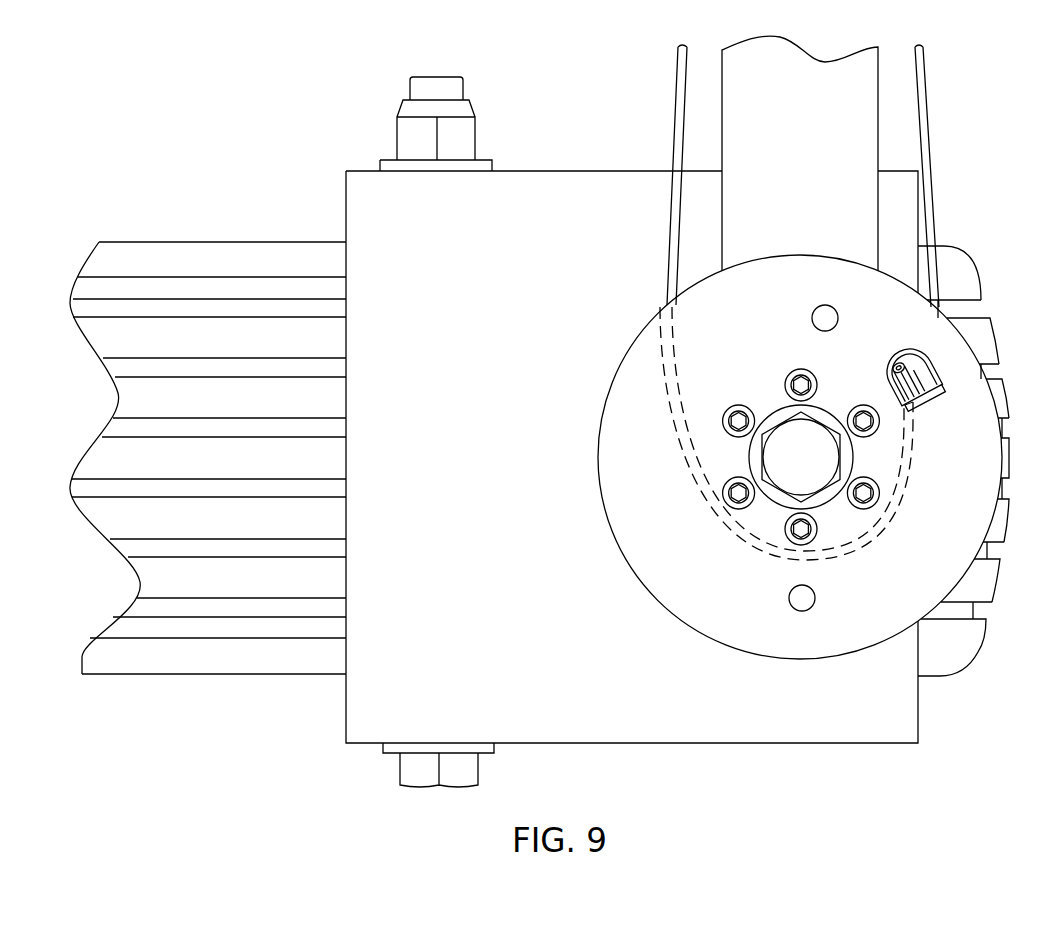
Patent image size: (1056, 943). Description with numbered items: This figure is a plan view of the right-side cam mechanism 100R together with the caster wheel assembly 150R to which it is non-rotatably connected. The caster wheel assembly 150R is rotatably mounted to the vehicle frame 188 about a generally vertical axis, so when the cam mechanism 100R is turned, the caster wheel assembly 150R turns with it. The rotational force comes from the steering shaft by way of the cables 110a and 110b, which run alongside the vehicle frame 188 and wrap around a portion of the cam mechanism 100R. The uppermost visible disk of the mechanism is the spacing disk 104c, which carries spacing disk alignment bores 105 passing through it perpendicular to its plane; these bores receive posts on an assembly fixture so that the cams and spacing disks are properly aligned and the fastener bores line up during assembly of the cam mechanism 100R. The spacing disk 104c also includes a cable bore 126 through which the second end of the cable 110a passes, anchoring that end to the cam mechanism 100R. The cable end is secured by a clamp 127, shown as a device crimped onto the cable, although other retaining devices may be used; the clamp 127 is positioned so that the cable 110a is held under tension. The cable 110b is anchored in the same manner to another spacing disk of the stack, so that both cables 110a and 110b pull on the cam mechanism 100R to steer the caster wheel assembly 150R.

The cam mechanism 100R is at (549, 591).
The spacing disk 104c is at (677, 492).
The spacing disk alignment bores 105 is at (814, 308).
The cable 110a is at (670, 232).
The cable 110b is at (934, 137).
The cable bore 126 is at (904, 352).
The clamp 127 is at (938, 368).
The caster wheel assembly 150R is at (208, 523).
The vehicle frame 188 is at (818, 200).